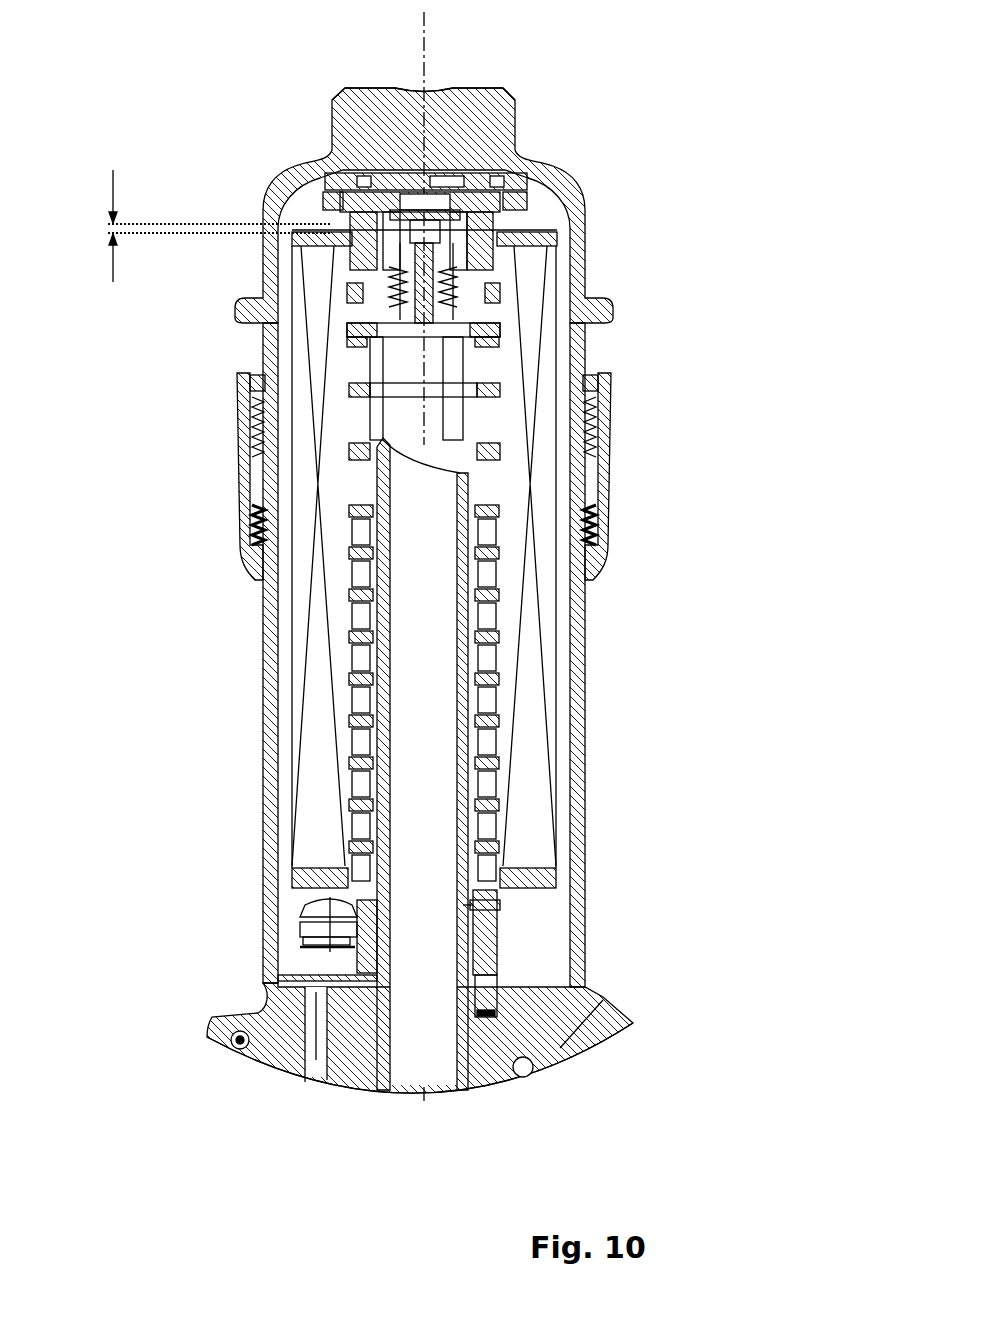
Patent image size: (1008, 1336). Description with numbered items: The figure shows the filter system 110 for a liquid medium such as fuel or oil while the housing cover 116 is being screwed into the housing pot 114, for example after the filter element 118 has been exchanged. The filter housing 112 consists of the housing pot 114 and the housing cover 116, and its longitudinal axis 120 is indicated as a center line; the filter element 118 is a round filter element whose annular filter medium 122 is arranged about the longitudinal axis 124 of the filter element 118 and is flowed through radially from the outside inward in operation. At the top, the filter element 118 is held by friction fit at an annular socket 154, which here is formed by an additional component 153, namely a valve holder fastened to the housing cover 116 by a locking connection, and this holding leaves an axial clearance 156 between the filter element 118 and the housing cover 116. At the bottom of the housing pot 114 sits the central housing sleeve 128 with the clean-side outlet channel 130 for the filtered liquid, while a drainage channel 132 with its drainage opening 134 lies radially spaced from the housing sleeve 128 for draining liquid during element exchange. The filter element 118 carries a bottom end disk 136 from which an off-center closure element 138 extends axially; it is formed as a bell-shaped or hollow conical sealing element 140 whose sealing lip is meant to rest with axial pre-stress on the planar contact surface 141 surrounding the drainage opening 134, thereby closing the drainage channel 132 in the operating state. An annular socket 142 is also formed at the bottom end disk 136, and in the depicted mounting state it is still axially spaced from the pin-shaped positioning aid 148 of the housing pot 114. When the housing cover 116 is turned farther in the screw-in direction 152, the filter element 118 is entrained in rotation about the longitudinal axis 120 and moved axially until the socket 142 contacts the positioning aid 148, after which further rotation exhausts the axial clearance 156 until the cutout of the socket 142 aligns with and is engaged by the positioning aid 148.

The filter system 110 is at (582, 148).
The filter housing 112 is at (612, 503).
The housing pot 114 is at (580, 733).
The housing cover 116 is at (575, 287).
The filter element 118 is at (543, 583).
The longitudinal axis of the filter housing 120 is at (446, 71).
The filter medium 122 is at (303, 588).
The longitudinal axis of the filter element 124 is at (424, 72).
The housing sleeve 128 is at (360, 785).
The outlet channel 130 is at (447, 806).
The drainage channel 132 is at (320, 1057).
The drainage opening 134 is at (316, 988).
The bottom end disk 136 is at (500, 895).
The closure element 138 is at (345, 922).
The sealing element 140 is at (335, 945).
The contact surface 141 is at (300, 966).
The socket 142 is at (470, 930).
The positioning aid 148 is at (510, 992).
The screw-in direction 152 is at (396, 22).
The additional component 153 is at (540, 220).
The annular socket 154 is at (548, 244).
The axial clearance 156 is at (113, 179).